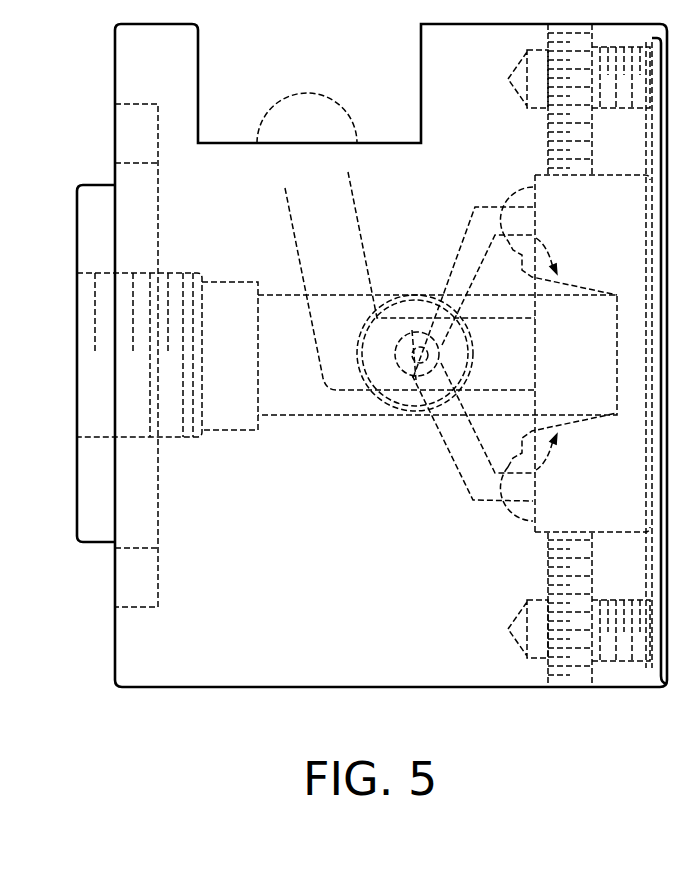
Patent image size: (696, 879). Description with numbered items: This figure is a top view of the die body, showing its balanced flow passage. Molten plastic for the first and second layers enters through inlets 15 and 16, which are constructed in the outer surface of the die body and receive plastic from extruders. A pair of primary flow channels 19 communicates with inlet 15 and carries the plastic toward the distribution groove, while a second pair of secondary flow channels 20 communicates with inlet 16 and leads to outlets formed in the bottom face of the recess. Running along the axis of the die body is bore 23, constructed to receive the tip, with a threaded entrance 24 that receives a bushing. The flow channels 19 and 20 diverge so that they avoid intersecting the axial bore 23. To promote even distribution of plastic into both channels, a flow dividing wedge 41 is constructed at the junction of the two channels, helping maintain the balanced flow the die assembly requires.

The inlet 15 is at (305, 158).
The inlet 16 is at (382, 373).
The flow channels 19 is at (312, 232).
The flow channels 20 is at (462, 250).
The bore 23 is at (284, 392).
The entrance 24 is at (88, 385).
The flow dividing wedge 41 is at (443, 345).